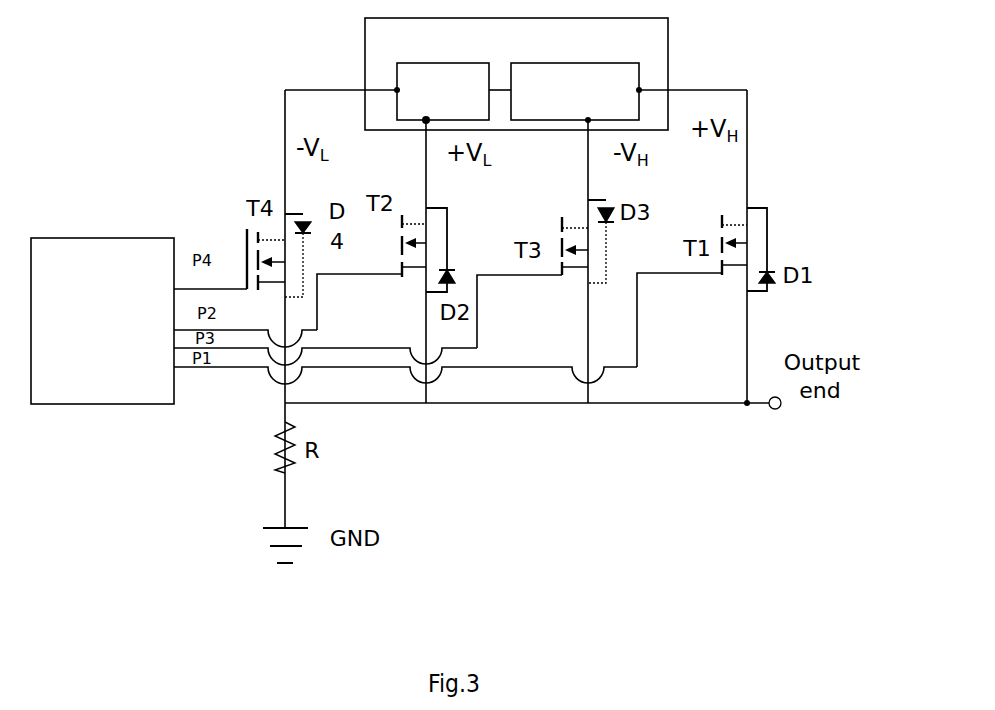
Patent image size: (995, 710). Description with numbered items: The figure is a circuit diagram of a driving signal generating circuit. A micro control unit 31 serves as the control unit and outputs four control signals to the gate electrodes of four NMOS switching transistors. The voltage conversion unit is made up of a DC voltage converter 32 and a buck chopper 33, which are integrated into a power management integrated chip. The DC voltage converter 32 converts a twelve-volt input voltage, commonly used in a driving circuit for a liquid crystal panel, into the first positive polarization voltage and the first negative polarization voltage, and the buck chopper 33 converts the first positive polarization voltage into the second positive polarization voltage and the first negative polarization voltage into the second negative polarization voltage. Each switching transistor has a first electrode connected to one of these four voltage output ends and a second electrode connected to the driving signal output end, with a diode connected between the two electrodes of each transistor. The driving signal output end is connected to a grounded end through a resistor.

The micro control unit 31 is at (99, 238).
The DC voltage converter 32 is at (567, 63).
The buck chopper 33 is at (482, 46).